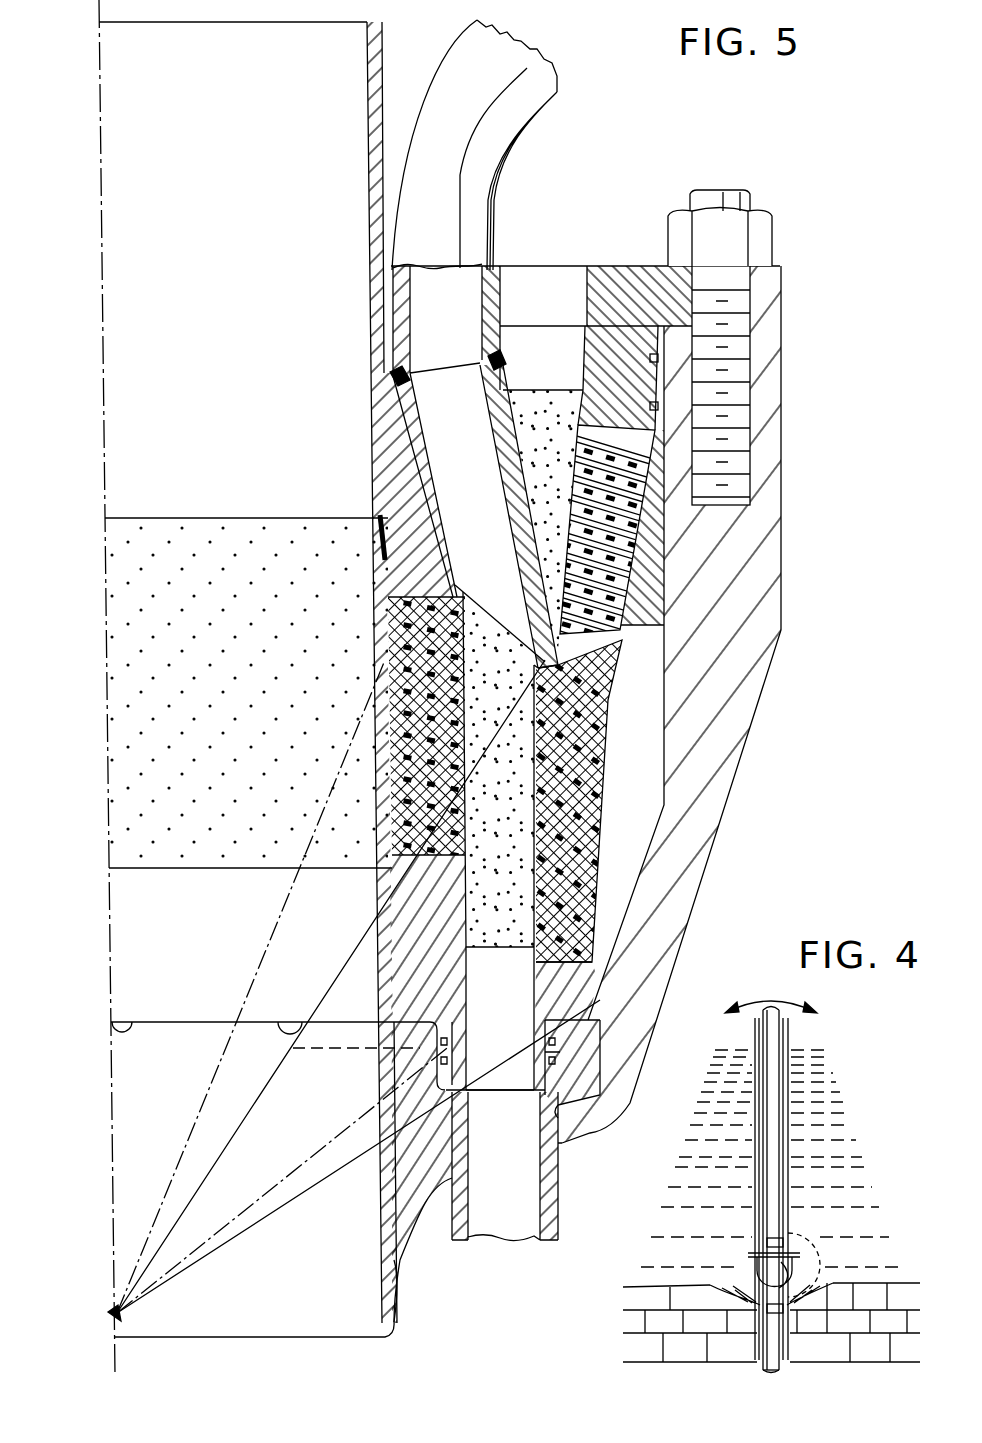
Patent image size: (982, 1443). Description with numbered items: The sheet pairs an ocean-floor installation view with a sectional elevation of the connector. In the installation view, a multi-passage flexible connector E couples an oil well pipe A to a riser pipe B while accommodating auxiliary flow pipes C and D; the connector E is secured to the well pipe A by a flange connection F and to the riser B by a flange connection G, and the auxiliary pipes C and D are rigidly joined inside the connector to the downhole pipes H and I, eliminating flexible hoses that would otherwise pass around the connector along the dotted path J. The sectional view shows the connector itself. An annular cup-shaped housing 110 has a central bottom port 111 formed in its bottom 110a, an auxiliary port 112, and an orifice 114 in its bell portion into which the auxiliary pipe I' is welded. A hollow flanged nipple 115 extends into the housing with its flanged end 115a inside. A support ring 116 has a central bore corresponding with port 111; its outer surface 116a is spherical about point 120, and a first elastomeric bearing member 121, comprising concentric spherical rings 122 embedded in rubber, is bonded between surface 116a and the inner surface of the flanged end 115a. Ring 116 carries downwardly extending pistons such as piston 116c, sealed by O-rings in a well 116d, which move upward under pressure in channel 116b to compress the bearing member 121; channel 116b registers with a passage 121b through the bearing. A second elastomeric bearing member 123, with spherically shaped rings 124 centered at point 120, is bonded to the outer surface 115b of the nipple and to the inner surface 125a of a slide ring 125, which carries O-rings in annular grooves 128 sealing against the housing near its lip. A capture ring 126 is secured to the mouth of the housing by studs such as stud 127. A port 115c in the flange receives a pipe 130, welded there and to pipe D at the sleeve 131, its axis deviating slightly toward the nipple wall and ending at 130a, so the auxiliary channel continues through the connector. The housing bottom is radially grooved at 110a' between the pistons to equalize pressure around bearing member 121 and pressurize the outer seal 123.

In FIG. 5, the annular cup-shaped housing 110 is at (688, 896).
In FIG. 5, the bottom of housing 110a is at (285, 1344).
In FIG. 5, the shoulder of body 110a' is at (270, 1019).
In FIG. 5, the central bottom port 111 is at (382, 1248).
In FIG. 5, the auxiliary port 112 is at (518, 605).
In FIG. 5, the orifice 114 is at (562, 1114).
In FIG. 5, the hollow flanged nipple 115 is at (382, 410).
In FIG. 5, the flanged end of nipple 115a is at (540, 698).
In FIG. 5, the outer surface of flanged nipple 115b is at (608, 704).
In FIG. 5, the port in flanged portion of nipple 115c is at (394, 566).
In FIG. 5, the support ring 116 is at (410, 915).
In FIG. 5, the outer surface of support ring 116a is at (420, 826).
In FIG. 5, the channel 116b is at (521, 989).
In FIG. 5, the piston 116c is at (562, 1053).
In FIG. 5, the well 116d is at (450, 1096).
In FIG. 5, the center of curvature point 120 is at (112, 1314).
In FIG. 5, the first elastomeric bearing member 121 is at (596, 850).
In FIG. 5, the passage through bearing member 121b is at (515, 816).
In FIG. 5, the concentric spherical rings 122 is at (596, 796).
In FIG. 5, the second elastomeric bearing member 123 is at (613, 588).
In FIG. 5, the spherically shaped rings 124 is at (582, 466).
In FIG. 5, the slide ring 125 is at (598, 366).
In FIG. 5, the inner surface of slide ring 125a is at (598, 432).
In FIG. 5, the capture ring 126 is at (615, 275).
In FIG. 5, the stud 127 is at (718, 190).
In FIG. 5, the annular grooves 128 is at (656, 402).
In FIG. 5, the pipe 130 is at (503, 427).
In FIG. 5, the sleeve end 130a is at (540, 664).
In FIG. 5, the tube 131 is at (490, 318).
In FIG. 5, the auxiliary flow pipe D is at (480, 170).
In FIG. 4, the auxiliary flow pipe D is at (787, 1105).
In FIG. 5, the multi-passage flexible connector E is at (784, 756).
In FIG. 4, the multi-passage flexible connector E is at (767, 1265).
In FIG. 5, the inner pipe I' is at (525, 1166).
In FIG. 4, the oil well pipe A is at (773, 1372).
In FIG. 4, the riser pipe B is at (773, 1023).
In FIG. 4, the auxiliary flow pipe C is at (760, 1100).
In FIG. 4, the flange connection F is at (767, 1320).
In FIG. 4, the flange connection G is at (773, 1236).
In FIG. 4, the downhole pipe H is at (763, 1348).
In FIG. 4, the downhole pipe I is at (771, 1322).
In FIG. 4, the hose path J is at (817, 1268).